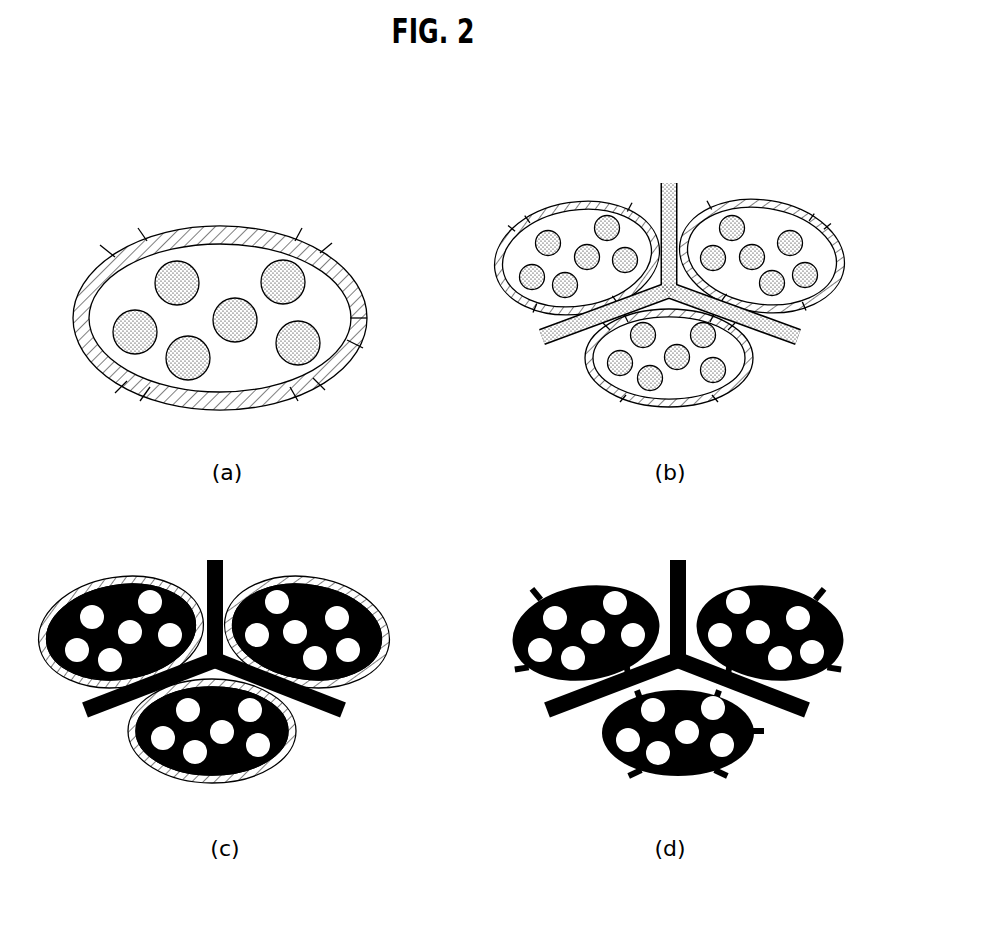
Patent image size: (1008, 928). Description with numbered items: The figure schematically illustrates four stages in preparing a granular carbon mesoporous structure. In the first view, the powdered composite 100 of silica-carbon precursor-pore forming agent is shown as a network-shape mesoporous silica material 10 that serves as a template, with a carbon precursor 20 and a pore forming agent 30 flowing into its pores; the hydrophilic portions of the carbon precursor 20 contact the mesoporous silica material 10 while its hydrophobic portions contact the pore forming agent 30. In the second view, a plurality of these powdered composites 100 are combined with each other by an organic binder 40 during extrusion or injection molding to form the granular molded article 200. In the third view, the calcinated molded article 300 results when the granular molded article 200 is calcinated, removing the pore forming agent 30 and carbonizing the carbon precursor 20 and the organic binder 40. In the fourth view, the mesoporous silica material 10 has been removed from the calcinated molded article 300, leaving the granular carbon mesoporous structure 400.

In FIG. 2a, the mesoporous silica material 10 is at (327, 375).
In FIG. 2b, the mesoporous silica material 10 is at (747, 380).
In FIG. 2c, the mesoporous silica material 10 is at (283, 755).
In FIG. 2a, the carbon precursor 20 is at (337, 327).
In FIG. 2b, the carbon precursor 20 is at (683, 387).
In FIG. 2a, the pore forming agent 30 is at (170, 280).
In FIG. 2b, the pore forming agent 30 is at (613, 367).
In FIG. 2b, the organic binder 40 is at (785, 340).
In FIG. 2a, the powdered composite of silica-carbon precursor-pore forming agent 100 is at (200, 219).
In FIG. 2b, the granular molded article 200 is at (652, 168).
In FIG. 2c, the calcinated molded article 300 is at (197, 545).
In FIG. 2d, the granular carbon mesoporous structure 400 is at (662, 545).